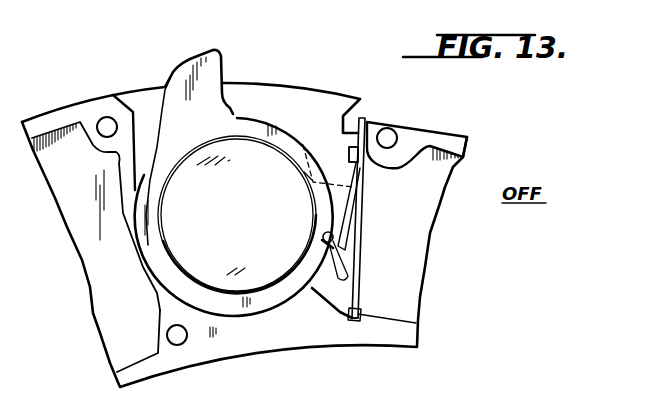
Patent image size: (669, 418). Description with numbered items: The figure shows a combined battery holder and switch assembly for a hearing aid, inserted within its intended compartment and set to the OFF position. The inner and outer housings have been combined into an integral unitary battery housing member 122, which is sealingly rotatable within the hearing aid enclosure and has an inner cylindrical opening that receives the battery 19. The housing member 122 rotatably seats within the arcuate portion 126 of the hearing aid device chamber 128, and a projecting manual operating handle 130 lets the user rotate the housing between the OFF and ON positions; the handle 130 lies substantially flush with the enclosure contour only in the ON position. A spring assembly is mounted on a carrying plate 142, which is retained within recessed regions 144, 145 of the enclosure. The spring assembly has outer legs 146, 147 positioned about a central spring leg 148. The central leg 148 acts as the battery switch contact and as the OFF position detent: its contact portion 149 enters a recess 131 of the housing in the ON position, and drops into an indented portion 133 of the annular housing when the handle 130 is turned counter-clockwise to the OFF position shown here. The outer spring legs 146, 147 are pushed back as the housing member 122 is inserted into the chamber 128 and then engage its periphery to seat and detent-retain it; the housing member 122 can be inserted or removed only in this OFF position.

The battery 19 is at (223, 239).
The battery housing member 122 is at (272, 117).
The arcuate portion 126 is at (165, 278).
The hearing aid device chamber 128 is at (358, 301).
The manual operating handle 130 is at (203, 34).
The recess 131 is at (309, 177).
The indented portion 133 is at (325, 237).
The carrying plate 142 is at (358, 247).
The recessed region 144 is at (368, 125).
The recessed region 145 is at (359, 306).
The outer spring leg 146 is at (350, 195).
The outer spring leg 147 is at (353, 154).
The central spring leg 148 is at (351, 211).
The contact portion 149 is at (313, 291).